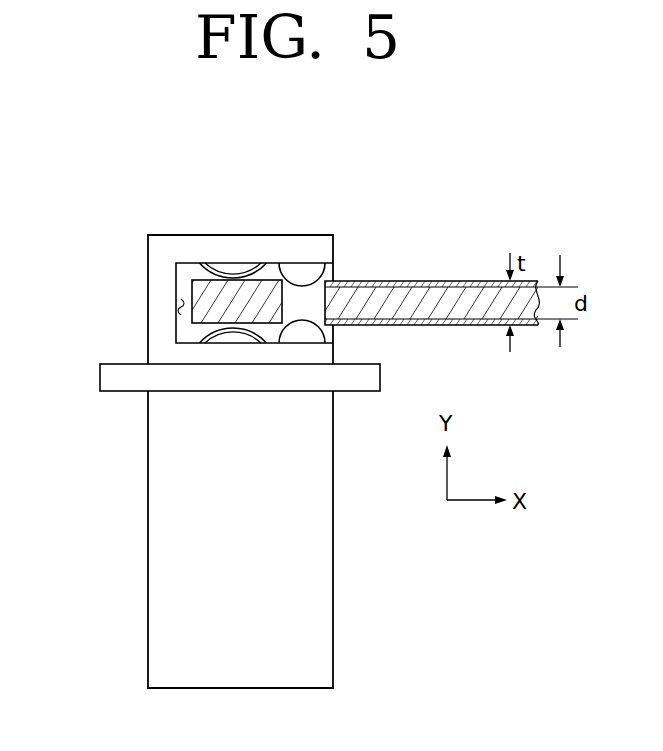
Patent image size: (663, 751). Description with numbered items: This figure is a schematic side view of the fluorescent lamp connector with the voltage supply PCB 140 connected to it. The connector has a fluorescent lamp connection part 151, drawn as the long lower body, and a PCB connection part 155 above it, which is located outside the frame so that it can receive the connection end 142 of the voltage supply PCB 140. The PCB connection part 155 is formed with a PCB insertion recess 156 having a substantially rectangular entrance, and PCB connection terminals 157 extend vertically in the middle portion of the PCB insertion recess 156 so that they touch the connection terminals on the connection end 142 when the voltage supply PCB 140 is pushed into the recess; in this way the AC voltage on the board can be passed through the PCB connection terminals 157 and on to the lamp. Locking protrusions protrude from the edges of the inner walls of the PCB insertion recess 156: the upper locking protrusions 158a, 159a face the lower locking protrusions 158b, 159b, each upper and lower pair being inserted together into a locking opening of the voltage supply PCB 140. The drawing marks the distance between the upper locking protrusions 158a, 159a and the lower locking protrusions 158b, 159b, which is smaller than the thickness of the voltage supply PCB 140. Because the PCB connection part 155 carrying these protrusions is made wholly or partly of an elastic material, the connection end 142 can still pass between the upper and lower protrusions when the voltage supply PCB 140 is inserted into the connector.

The voltage supply PCB 140 is at (480, 281).
The connection end 142 is at (201, 293).
The fluorescent lamp connection part 151 is at (147, 493).
The PCB connection part 155 is at (147, 253).
The PCB insertion recess 156 is at (178, 307).
The PCB connection terminals 157 is at (256, 333).
The upper locking protrusion of first pair 158a is at (366, 238).
The upper locking protrusion of second pair 159a is at (318, 272).
The lower locking protrusion of first pair 158b is at (386, 343).
The lower locking protrusion of second pair 159b is at (318, 335).